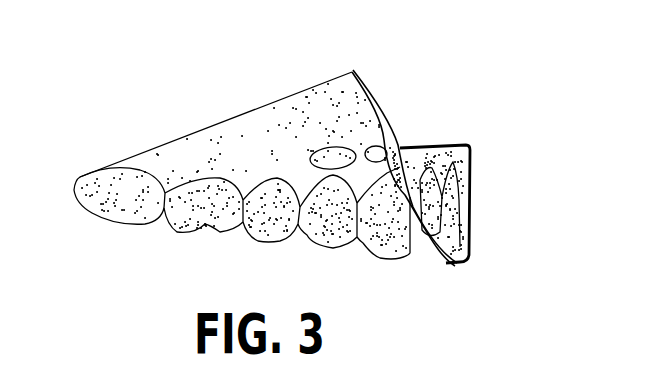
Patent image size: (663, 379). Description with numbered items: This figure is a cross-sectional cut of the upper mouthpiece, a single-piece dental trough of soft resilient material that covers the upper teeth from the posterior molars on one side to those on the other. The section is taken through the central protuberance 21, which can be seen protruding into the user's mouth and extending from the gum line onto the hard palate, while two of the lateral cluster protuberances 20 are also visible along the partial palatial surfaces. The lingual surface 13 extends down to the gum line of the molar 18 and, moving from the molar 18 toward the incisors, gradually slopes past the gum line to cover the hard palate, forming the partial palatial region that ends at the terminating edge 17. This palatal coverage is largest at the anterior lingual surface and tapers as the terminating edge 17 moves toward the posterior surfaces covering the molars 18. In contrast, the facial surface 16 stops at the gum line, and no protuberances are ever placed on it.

The lingual surface 13 is at (228, 165).
The facial surface 16 is at (472, 222).
The terminating edge 17 is at (353, 70).
The molar 18 is at (105, 185).
The lateral cluster of protuberances 20 is at (322, 150).
The central protuberance 21 is at (405, 190).